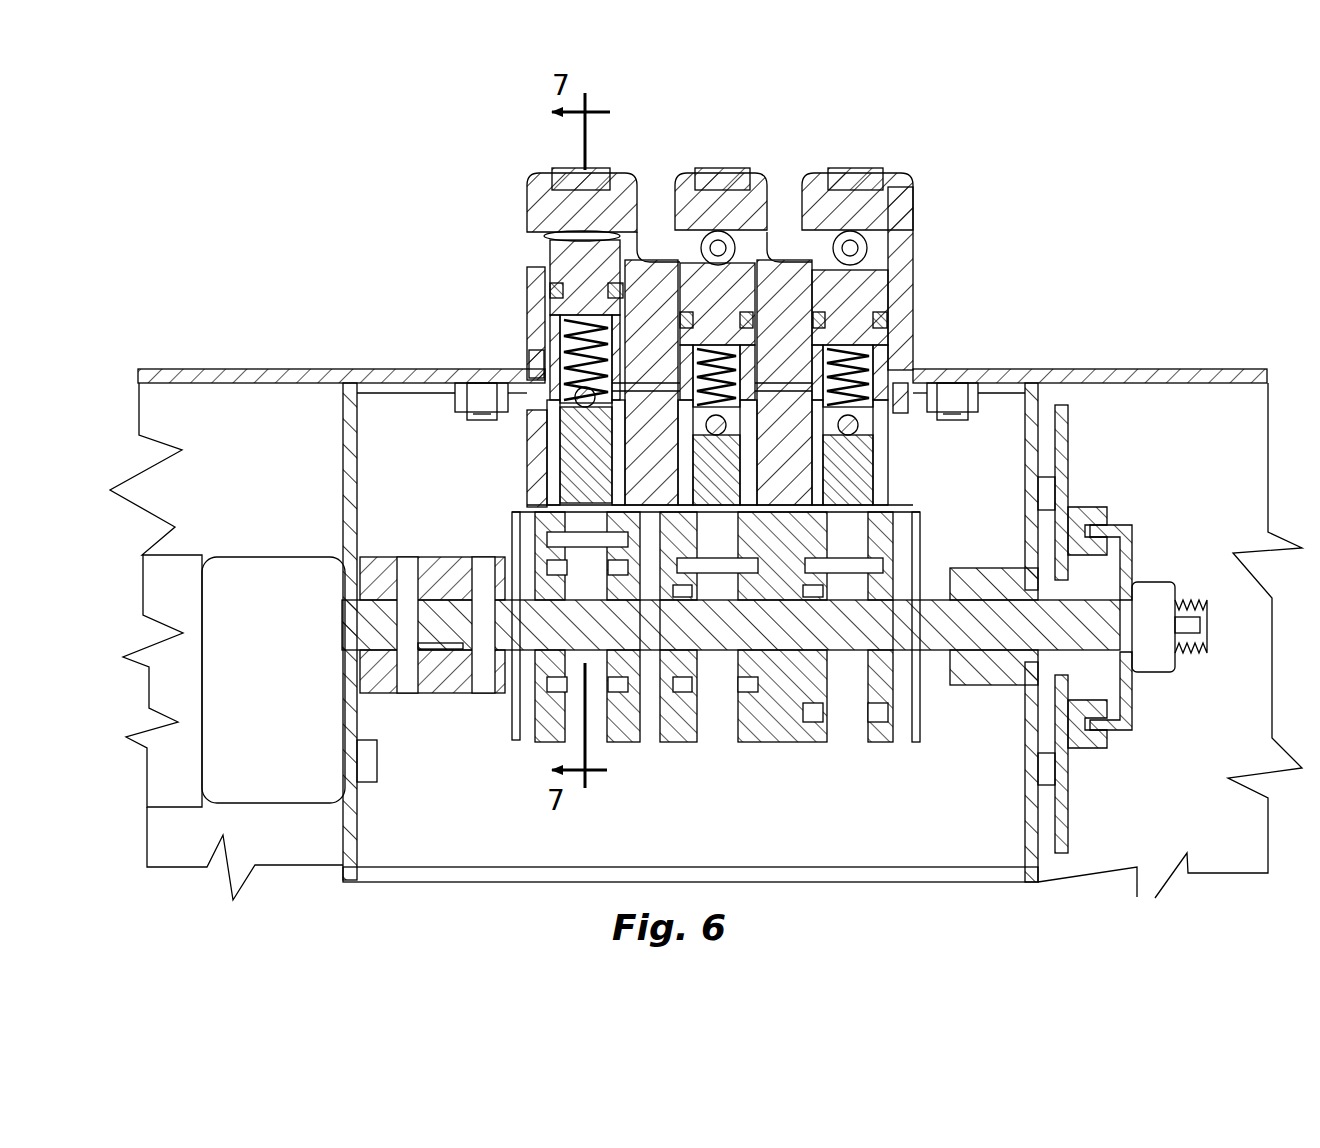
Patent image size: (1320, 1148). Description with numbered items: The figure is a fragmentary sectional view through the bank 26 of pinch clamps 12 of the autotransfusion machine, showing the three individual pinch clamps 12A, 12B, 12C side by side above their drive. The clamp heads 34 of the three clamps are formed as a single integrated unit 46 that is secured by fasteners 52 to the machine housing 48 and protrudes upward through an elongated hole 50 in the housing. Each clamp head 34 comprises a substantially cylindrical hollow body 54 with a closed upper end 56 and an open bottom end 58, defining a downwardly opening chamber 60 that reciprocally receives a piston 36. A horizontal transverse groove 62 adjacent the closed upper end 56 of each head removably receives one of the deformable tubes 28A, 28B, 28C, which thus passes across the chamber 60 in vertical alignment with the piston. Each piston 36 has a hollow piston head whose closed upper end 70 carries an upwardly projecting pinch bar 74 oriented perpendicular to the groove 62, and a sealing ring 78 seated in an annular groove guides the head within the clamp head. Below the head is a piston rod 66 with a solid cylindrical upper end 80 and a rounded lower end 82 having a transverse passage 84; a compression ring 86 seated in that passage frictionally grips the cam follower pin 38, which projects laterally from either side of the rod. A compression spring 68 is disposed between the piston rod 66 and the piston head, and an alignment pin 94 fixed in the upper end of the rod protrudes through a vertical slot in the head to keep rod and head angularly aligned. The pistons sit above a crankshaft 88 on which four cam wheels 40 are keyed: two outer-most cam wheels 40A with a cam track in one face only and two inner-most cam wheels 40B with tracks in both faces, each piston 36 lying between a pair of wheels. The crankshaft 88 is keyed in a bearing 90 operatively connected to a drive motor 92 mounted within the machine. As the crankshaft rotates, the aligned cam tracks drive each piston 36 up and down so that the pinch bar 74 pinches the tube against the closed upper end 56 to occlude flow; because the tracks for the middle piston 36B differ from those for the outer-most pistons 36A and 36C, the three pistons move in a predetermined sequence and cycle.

The pinch clamp 12 is at (920, 177).
The first clutch cylinder 12A is at (527, 305).
The second clutch cylinder 12B is at (770, 210).
The third clutch cylinder 12C is at (913, 225).
The bank of clamps 26 is at (465, 143).
The first piston 28A is at (540, 233).
The second piston 28B is at (690, 255).
The third piston 28C is at (802, 230).
The clamp head 34 is at (527, 278).
The piston 36 is at (880, 285).
The outer-most piston 36A is at (583, 217).
The middle piston 36B is at (718, 195).
The outer-most piston 36C is at (910, 215).
The cam follower pin 38 is at (548, 540).
The cam wheels 40 is at (520, 748).
The outer-most cam wheels 40A is at (510, 740).
The inner-most cam wheels 40B is at (867, 745).
The integrated unit 46 is at (920, 115).
The housing 48 is at (1073, 368).
The elongated hole 50 is at (923, 372).
The fasteners 52 is at (468, 410).
The cylindrical hollow body 54 is at (612, 190).
The closed upper end 56 is at (607, 172).
The open bottom end 58 is at (548, 472).
The chamber 60 is at (575, 440).
The transverse groove 62 is at (543, 265).
The piston rod 66 is at (560, 420).
The compression spring 68 is at (565, 345).
The closed upper end 70 is at (552, 292).
The pinch bar 74 is at (543, 230).
The sealing ring 78 is at (570, 233).
The upper end 80 is at (578, 396).
The rounded lower end 82 is at (555, 566).
The transverse passage 84 is at (853, 612).
The compression ring 86 is at (490, 643).
The crankshaft 88 is at (953, 630).
The bearing 90 is at (385, 557).
The drive motor 92 is at (178, 555).
The alignment pin 94 is at (478, 383).